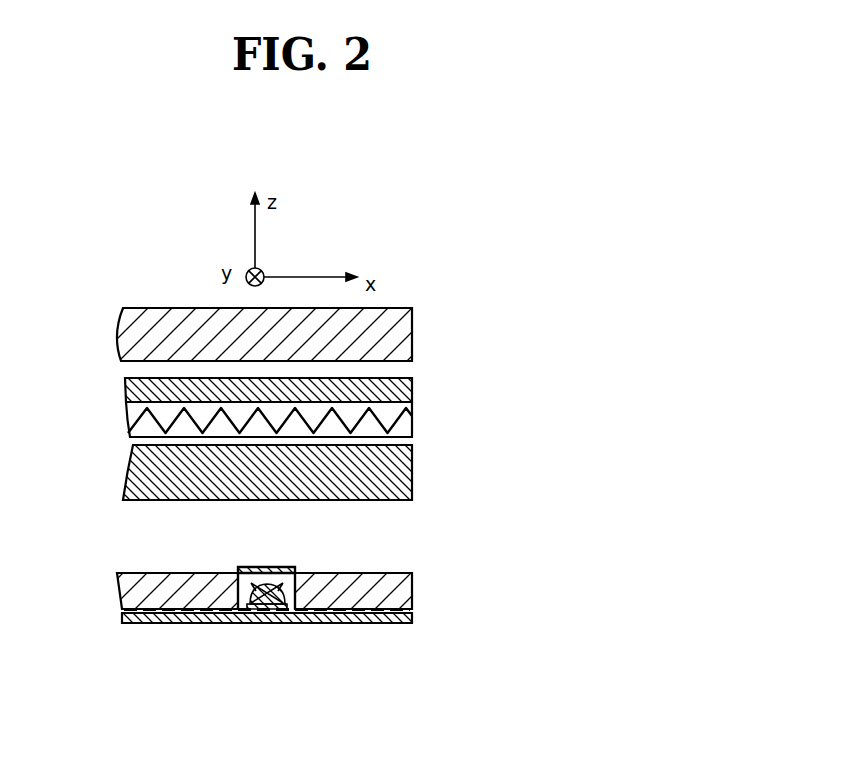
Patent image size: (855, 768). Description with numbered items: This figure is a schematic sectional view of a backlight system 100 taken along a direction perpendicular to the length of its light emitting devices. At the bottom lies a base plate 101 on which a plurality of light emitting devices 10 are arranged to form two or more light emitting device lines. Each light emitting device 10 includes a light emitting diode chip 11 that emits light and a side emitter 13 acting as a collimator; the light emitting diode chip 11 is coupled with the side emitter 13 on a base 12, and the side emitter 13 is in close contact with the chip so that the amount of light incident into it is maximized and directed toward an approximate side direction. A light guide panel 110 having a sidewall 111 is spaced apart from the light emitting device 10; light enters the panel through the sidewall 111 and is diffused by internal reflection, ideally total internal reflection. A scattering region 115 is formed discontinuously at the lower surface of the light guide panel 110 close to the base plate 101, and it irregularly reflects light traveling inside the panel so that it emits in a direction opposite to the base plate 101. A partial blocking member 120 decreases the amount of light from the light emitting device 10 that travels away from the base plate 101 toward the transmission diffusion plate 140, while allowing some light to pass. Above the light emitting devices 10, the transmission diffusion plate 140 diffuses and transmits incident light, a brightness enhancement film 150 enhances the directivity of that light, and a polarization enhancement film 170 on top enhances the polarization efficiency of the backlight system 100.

The backlight system 100 is at (453, 268).
The polarization enhancement film 170 is at (413, 333).
The brightness enhancement film 150 is at (422, 378).
The transmission diffusion plate 140 is at (413, 467).
The light guide panel 110 is at (413, 590).
The scattering region 115 is at (137, 614).
The base plate 101 is at (413, 622).
The sidewall 111 is at (237, 570).
The partial blocking member 120 is at (289, 567).
The light emitting device 10 is at (267, 656).
The light emitting diode chip 11 is at (248, 611).
The base 12 is at (271, 611).
The side emitter 13 is at (284, 633).